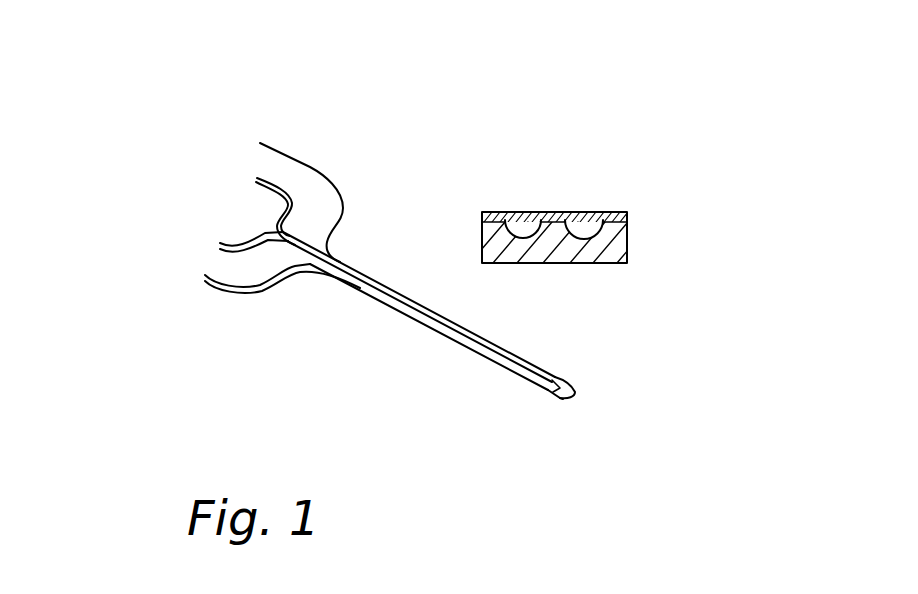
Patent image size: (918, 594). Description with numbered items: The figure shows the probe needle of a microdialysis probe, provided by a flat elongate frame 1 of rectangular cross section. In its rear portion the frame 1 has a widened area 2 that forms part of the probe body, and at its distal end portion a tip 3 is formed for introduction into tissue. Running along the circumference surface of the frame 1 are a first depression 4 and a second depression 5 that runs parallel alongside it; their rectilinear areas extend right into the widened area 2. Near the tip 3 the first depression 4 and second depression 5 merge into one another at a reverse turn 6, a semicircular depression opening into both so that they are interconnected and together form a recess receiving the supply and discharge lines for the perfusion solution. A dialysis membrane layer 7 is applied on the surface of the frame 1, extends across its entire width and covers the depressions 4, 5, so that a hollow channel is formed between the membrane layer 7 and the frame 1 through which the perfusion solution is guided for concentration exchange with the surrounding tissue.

The frame 1 is at (313, 310).
The widened area 2 is at (307, 187).
The tip 3 is at (573, 385).
The first depression 4 is at (399, 291).
The second depression 5 is at (400, 312).
The reverse turn 6 is at (550, 397).
The dialysis membrane layer 7 is at (623, 213).